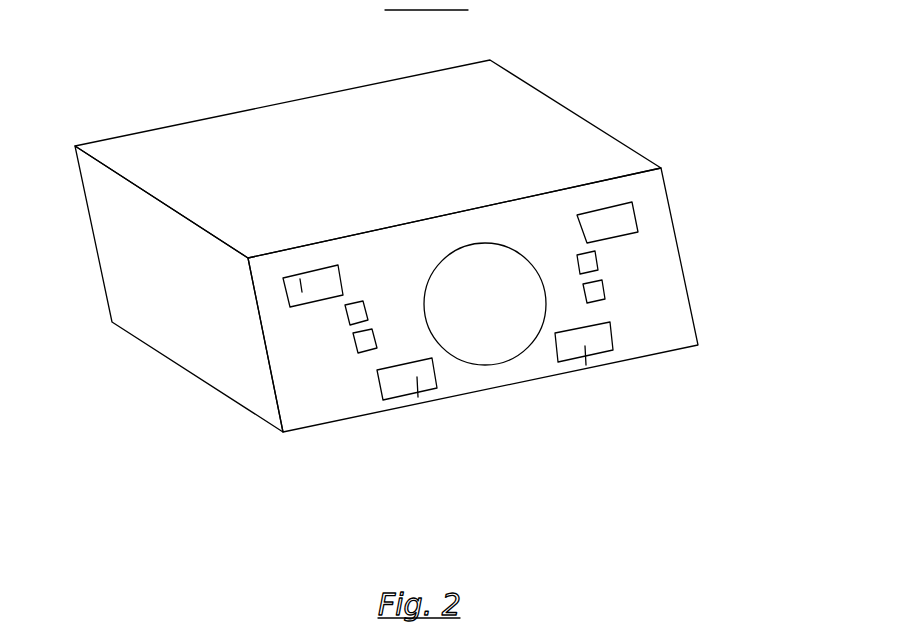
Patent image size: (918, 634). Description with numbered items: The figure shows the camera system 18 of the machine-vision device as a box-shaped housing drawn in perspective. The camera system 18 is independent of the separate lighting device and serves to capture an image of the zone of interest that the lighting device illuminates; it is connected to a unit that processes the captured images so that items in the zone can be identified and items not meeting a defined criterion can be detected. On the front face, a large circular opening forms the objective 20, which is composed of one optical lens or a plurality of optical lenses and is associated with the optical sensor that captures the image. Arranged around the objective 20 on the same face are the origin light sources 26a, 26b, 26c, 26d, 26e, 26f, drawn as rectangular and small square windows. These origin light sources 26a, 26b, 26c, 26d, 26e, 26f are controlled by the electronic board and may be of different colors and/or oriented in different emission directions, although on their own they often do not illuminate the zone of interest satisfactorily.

The camera system 18 is at (271, 80).
The objective 20 is at (490, 353).
The origin light source 26a is at (297, 270).
The origin light source 26b is at (600, 222).
The origin light source 26c is at (603, 287).
The origin light source 26d is at (586, 365).
The origin light source 26e is at (418, 397).
The origin light source 26f is at (350, 313).